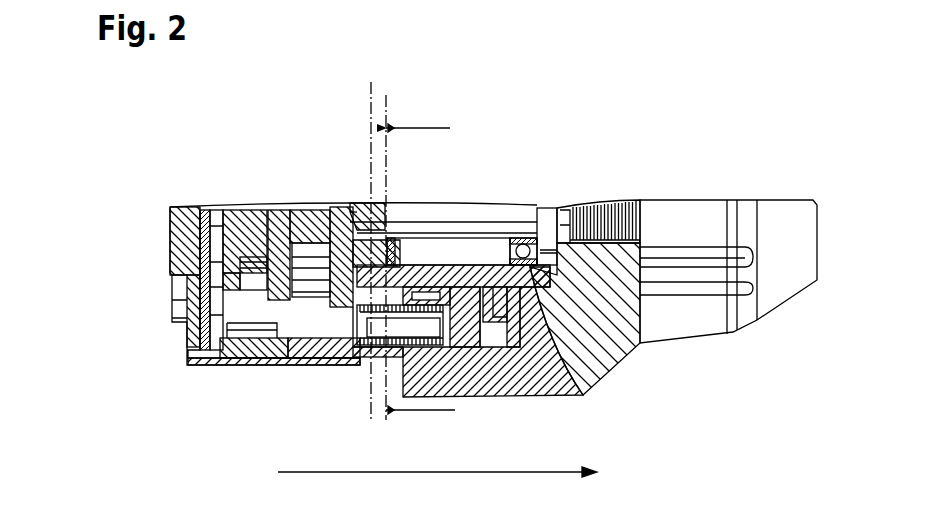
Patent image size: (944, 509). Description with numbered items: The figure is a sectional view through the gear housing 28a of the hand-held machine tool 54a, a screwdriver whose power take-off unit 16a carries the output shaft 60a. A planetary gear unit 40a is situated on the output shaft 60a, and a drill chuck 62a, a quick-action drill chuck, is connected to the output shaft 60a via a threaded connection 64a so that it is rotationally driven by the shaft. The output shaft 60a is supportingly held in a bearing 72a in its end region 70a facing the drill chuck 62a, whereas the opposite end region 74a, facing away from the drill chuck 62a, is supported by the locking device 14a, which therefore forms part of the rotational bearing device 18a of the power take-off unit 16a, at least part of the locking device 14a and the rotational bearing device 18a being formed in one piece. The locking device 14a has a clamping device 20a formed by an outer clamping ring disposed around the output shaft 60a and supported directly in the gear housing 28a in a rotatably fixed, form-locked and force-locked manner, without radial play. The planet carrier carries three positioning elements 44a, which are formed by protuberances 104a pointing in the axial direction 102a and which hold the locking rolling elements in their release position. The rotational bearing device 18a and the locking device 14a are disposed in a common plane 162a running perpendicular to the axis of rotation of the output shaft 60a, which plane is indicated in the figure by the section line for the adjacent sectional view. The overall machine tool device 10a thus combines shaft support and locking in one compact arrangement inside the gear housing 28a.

The machine tool separating device 10a is at (230, 162).
The locking device 14a is at (347, 233).
The power take-off unit 16a is at (505, 215).
The rotational bearing device 18a is at (395, 236).
The clamping device 20a is at (370, 292).
The gear housing 28a is at (298, 320).
The planetary gear unit 40a is at (324, 302).
The positioning elements 44a is at (415, 240).
The hand-held machine tool 54a is at (178, 185).
The output shaft 60a is at (540, 224).
The drill chuck 62a is at (767, 290).
The threaded connection 64a is at (640, 223).
The end region 70a is at (626, 168).
The bearing 72a is at (562, 350).
The end region 74a is at (355, 184).
The axial direction 102a is at (466, 470).
The protuberances 104a is at (455, 237).
The common plane 162a is at (370, 107).